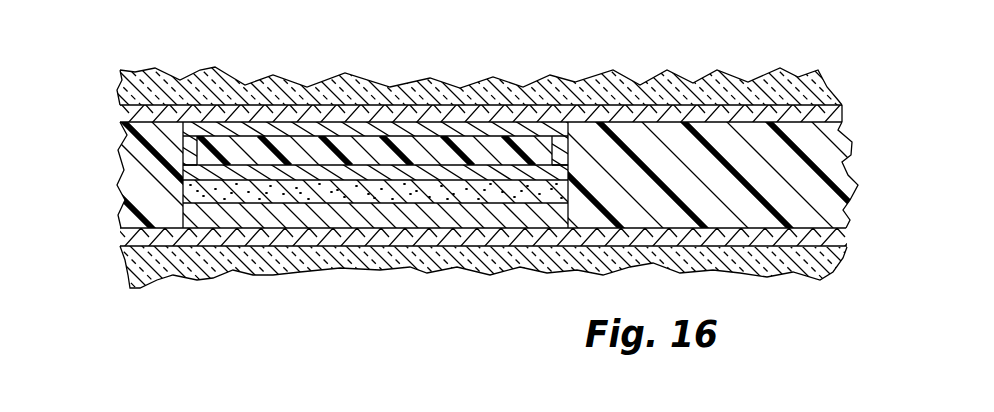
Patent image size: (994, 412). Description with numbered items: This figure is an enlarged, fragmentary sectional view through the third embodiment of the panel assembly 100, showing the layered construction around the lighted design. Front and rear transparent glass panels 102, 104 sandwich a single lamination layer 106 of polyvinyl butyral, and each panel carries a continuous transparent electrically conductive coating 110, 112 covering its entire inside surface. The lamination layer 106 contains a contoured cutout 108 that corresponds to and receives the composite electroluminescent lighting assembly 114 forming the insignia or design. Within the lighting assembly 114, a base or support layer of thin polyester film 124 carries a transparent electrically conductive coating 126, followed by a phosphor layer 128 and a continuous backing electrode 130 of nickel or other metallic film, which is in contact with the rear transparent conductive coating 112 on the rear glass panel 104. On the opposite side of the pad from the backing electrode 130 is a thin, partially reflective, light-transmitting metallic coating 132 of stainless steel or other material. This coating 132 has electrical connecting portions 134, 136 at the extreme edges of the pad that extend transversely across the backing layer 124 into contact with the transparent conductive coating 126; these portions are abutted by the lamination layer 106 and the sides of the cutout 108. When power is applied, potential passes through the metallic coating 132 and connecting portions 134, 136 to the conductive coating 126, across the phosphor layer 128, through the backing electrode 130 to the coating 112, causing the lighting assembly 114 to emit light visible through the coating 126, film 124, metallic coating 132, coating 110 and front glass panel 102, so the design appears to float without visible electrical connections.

The panel assembly 100 is at (803, 68).
The front glass panel 102 is at (688, 88).
The rear glass panel 104 is at (787, 260).
The lamination layer 106 is at (838, 130).
The contoured cutout 108 is at (562, 140).
The transparent electrically conductive coating 110 is at (137, 115).
The transparent electrically conductive coating 112 is at (138, 238).
The composite electroluminescent lighting assembly 114 is at (206, 192).
The polyester film 124 is at (485, 148).
The transparent electrically conductive coating 126 is at (538, 175).
The phosphor layer 128 is at (480, 198).
The backing electrode 130 is at (415, 217).
The partially reflective metallic coating 132 is at (259, 128).
The electrical connecting portion 134 is at (190, 155).
The electrical connecting portion 136 is at (567, 152).